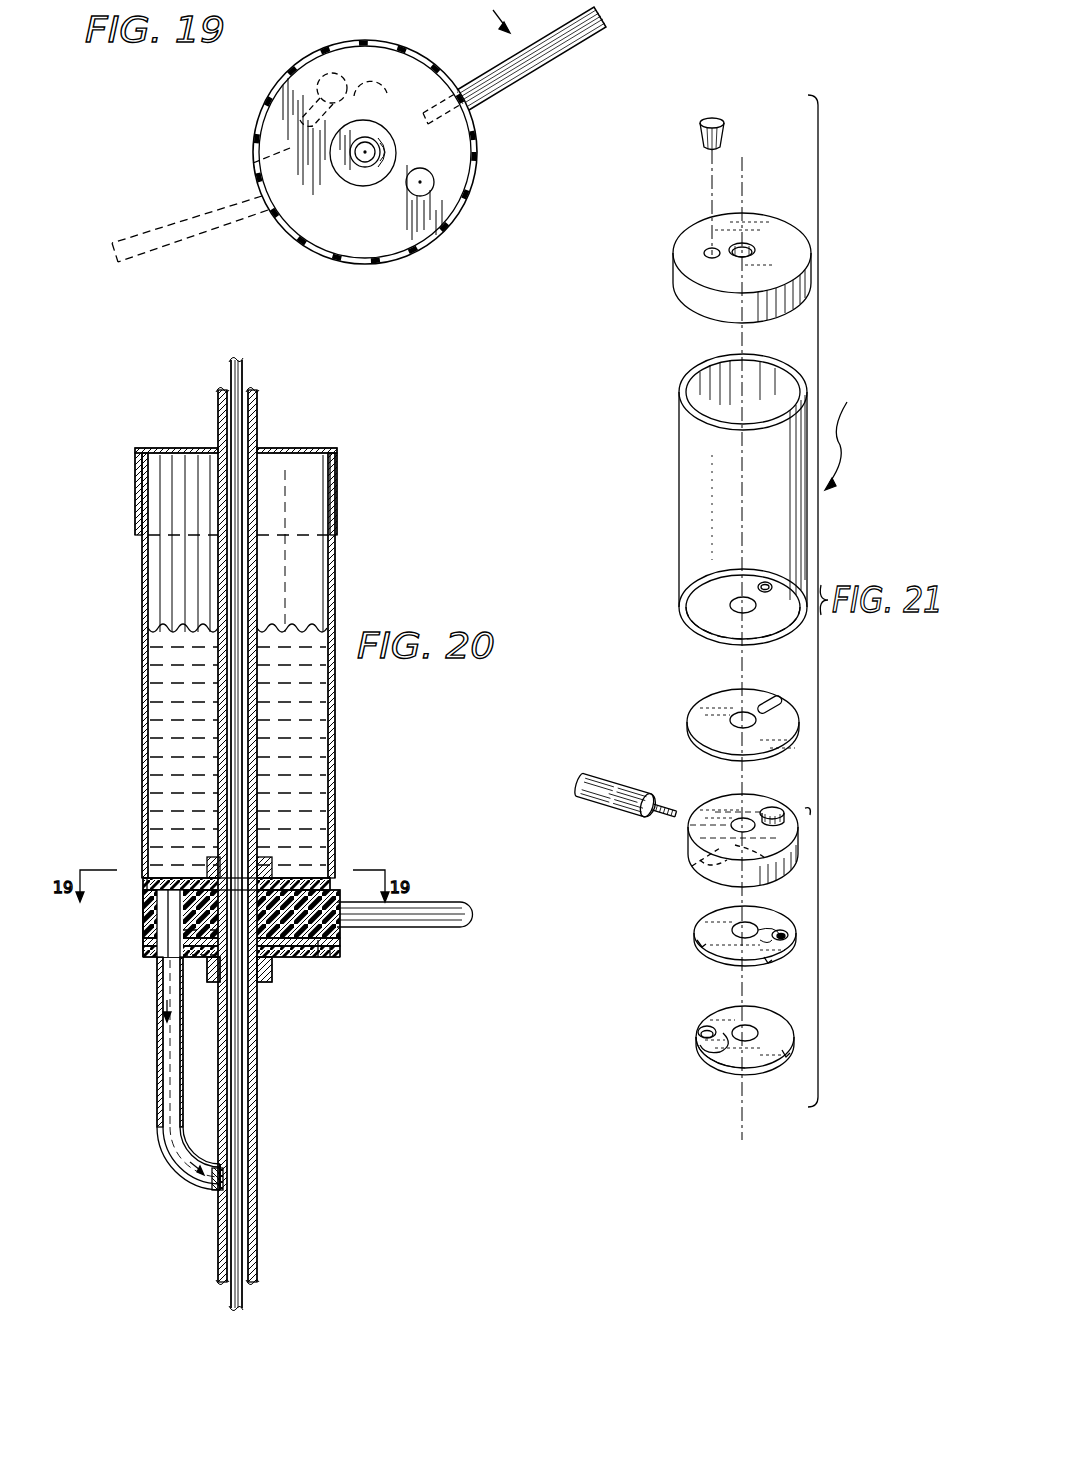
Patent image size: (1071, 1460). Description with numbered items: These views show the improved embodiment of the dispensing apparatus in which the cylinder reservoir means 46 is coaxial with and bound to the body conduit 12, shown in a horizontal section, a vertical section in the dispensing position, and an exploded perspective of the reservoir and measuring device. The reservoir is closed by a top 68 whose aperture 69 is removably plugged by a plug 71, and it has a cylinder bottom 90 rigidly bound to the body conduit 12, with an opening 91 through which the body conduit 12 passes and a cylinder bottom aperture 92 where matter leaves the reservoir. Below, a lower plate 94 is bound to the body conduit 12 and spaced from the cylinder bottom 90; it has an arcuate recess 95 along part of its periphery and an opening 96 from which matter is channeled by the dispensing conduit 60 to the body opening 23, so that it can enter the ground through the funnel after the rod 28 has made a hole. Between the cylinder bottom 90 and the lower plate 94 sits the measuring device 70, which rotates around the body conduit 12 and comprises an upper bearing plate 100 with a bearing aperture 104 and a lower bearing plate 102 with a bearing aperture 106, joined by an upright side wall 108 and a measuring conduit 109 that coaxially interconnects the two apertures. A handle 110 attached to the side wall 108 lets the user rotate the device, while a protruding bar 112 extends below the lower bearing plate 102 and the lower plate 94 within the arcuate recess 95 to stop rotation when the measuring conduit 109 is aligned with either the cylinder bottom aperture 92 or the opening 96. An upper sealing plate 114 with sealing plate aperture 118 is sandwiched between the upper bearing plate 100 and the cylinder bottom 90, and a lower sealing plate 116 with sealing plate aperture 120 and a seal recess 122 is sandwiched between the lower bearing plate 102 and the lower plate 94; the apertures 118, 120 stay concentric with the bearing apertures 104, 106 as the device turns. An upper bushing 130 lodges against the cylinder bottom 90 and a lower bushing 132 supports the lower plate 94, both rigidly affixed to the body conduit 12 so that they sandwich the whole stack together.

In FIG. 19, the body conduit 12 is at (368, 178).
In FIG. 20, the body conduit 12 is at (253, 410).
In FIG. 20, the opening 23 is at (227, 1182).
In FIG. 19, the rod 28 is at (357, 160).
In FIG. 20, the rod 28 is at (220, 376).
In FIG. 20, the cylinder reservoir means 46 is at (340, 572).
In FIG. 21, the cylinder reservoir means 46 is at (841, 437).
In FIG. 19, the dispensing conduit 60 is at (253, 163).
In FIG. 20, the dispensing conduit 60 is at (168, 1142).
In FIG. 20, the top 68 is at (300, 447).
In FIG. 21, the top 68 is at (709, 254).
In FIG. 21, the aperture 69 is at (705, 258).
In FIG. 20, the measuring device 70 is at (136, 938).
In FIG. 21, the plug 71 is at (714, 118).
In FIG. 20, the cylinder bottom 90 is at (305, 880).
In FIG. 21, the cylinder bottom 90 is at (714, 518).
In FIG. 21, the opening 91 is at (735, 600).
In FIG. 19, the cylinder bottom aperture 92 is at (421, 197).
In FIG. 21, the cylinder bottom aperture 92 is at (758, 590).
In FIG. 20, the lower plate 94 is at (263, 975).
In FIG. 21, the lower plate 94 is at (724, 1046).
In FIG. 21, the arcuate recess 95 is at (782, 1063).
In FIG. 19, the opening 96 is at (372, 97).
In FIG. 20, the opening 96 is at (183, 963).
In FIG. 21, the opening 96 is at (723, 1033).
In FIG. 20, the upper bearing plate 100 is at (330, 950).
In FIG. 20, the lower bearing plate 102 is at (310, 950).
In FIG. 21, the lower bearing plate 102 is at (726, 860).
In FIG. 20, the bearing aperture 104 is at (147, 895).
In FIG. 21, the bearing aperture 104 is at (780, 810).
In FIG. 20, the bearing aperture 106 is at (183, 955).
In FIG. 21, the bearing aperture 106 is at (760, 862).
In FIG. 20, the upright side wall 108 is at (147, 910).
In FIG. 21, the upright side wall 108 is at (721, 1007).
In FIG. 20, the measuring conduit 109 is at (197, 930).
In FIG. 21, the measuring conduit 109 is at (692, 866).
In FIG. 19, the handle 110 is at (545, 72).
In FIG. 20, the handle 110 is at (455, 915).
In FIG. 21, the handle 110 is at (640, 805).
In FIG. 21, the protruding bar 112 is at (727, 860).
In FIG. 20, the upper sealing plate 114 is at (337, 885).
In FIG. 21, the upper sealing plate 114 is at (715, 707).
In FIG. 20, the lower sealing plate 116 is at (320, 957).
In FIG. 21, the lower sealing plate 116 is at (763, 945).
In FIG. 20, the sealing plate aperture 118 is at (196, 886).
In FIG. 21, the sealing plate aperture 118 is at (780, 700).
In FIG. 19, the sealing plate aperture 120 is at (293, 82).
In FIG. 21, the sealing plate aperture 120 is at (748, 933).
In FIG. 21, the seal recess 122 is at (702, 947).
In FIG. 19, the upper bushing 130 is at (358, 178).
In FIG. 20, the upper bushing 130 is at (275, 856).
In FIG. 20, the lower bushing 132 is at (263, 965).